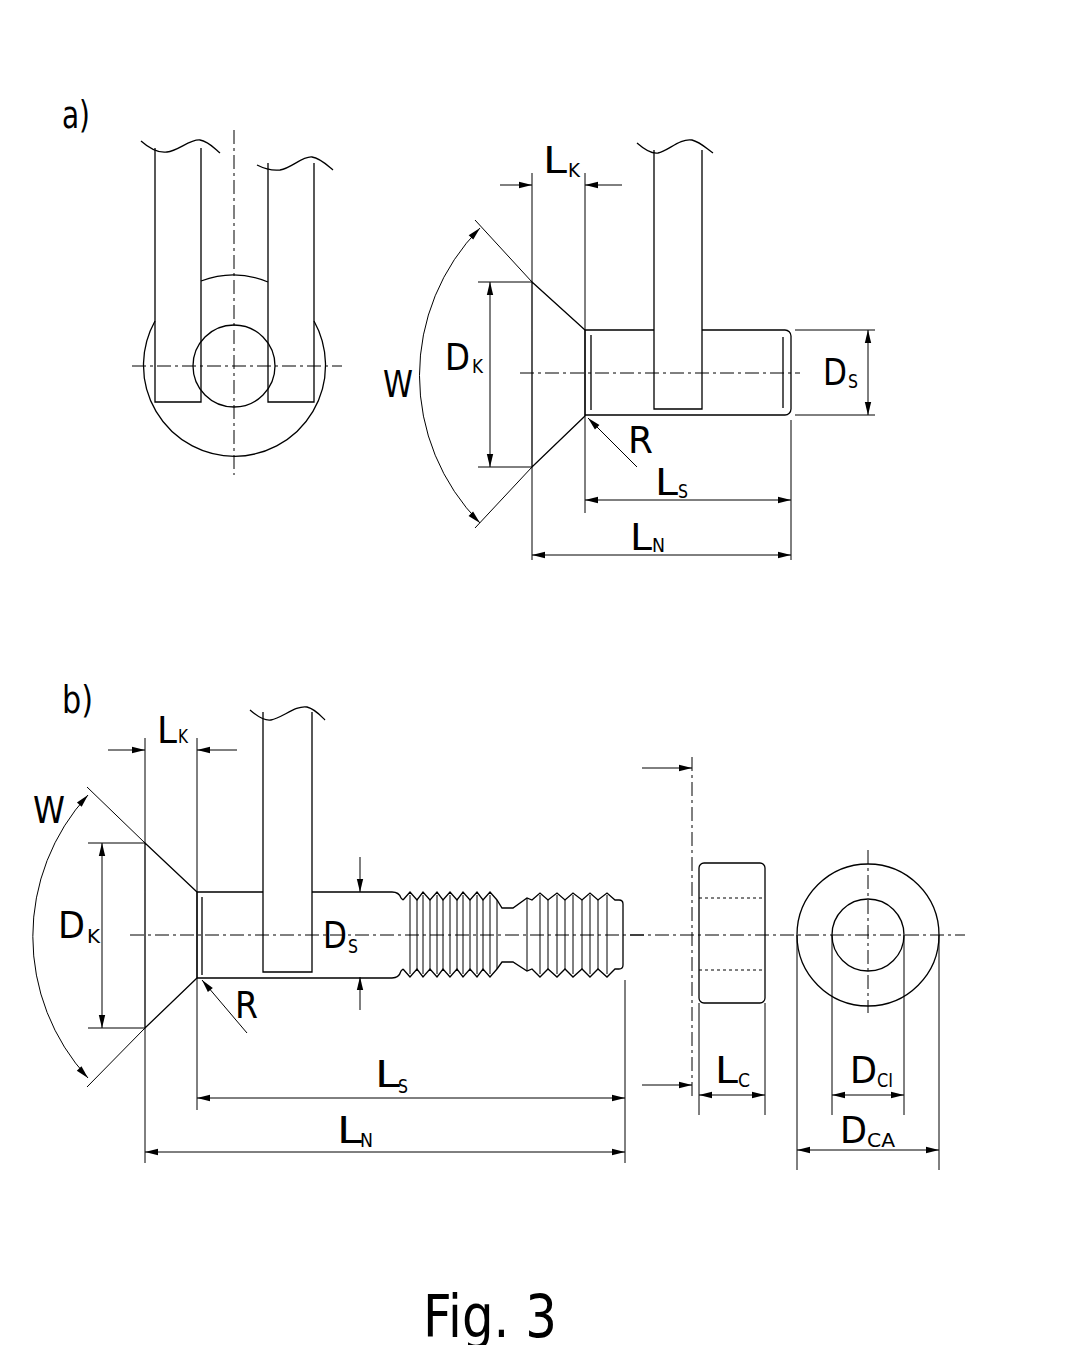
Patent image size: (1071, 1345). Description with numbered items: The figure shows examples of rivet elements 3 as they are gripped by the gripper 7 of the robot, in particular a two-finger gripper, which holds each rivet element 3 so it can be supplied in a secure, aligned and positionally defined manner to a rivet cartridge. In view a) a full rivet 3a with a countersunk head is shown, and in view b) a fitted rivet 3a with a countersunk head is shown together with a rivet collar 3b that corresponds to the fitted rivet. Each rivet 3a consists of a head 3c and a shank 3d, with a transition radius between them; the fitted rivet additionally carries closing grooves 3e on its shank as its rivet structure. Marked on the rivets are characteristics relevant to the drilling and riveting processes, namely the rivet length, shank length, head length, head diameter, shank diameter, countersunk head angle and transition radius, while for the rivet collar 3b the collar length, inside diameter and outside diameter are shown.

The rivet element 3 is at (498, 613).
The rivet 3a is at (424, 613).
The rivet collar 3b is at (835, 825).
The head 3c is at (200, 429).
The shank 3d is at (224, 347).
The closing grooves 3e is at (458, 907).
The gripper 7 is at (288, 178).